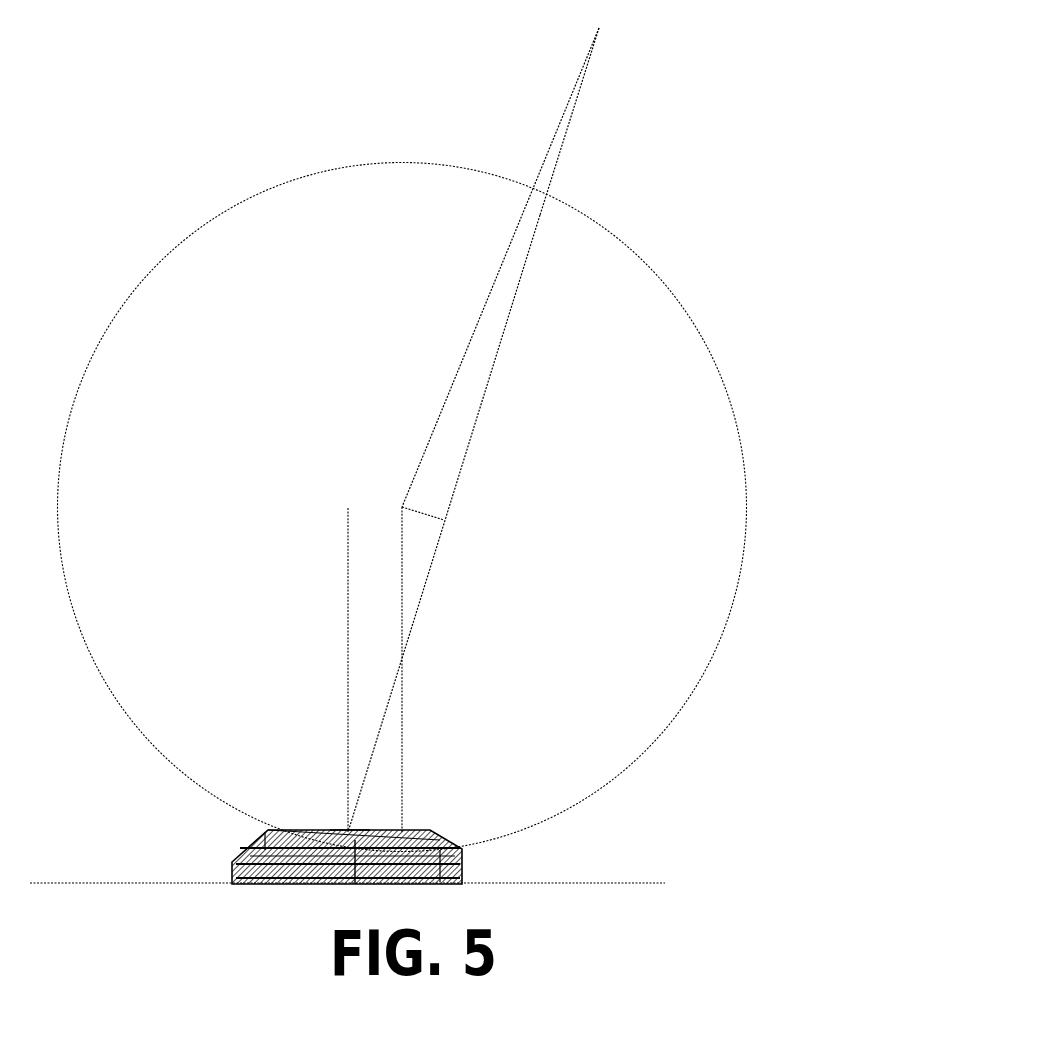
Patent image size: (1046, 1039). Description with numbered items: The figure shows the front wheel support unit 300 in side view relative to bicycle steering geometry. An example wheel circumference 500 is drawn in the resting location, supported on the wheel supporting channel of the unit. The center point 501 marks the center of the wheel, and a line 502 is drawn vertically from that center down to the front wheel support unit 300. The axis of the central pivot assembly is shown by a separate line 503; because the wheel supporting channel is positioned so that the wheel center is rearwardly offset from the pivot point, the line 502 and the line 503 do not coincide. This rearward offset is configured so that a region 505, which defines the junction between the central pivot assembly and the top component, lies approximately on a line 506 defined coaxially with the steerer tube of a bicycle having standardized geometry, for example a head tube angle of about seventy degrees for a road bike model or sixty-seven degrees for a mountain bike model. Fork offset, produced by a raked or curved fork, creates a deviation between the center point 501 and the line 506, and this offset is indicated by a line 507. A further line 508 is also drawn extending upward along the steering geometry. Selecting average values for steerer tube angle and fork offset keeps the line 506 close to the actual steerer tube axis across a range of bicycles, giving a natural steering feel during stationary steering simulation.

The front wheel support unit 300 is at (215, 829).
The wheel circumference 500 is at (643, 258).
The center point 501 is at (402, 507).
The line 502 is at (400, 760).
The line 503 is at (348, 635).
The region 505 is at (348, 832).
The line 506 is at (425, 590).
The line 507 is at (440, 415).
The tilted sensing axis 508 is at (568, 118).